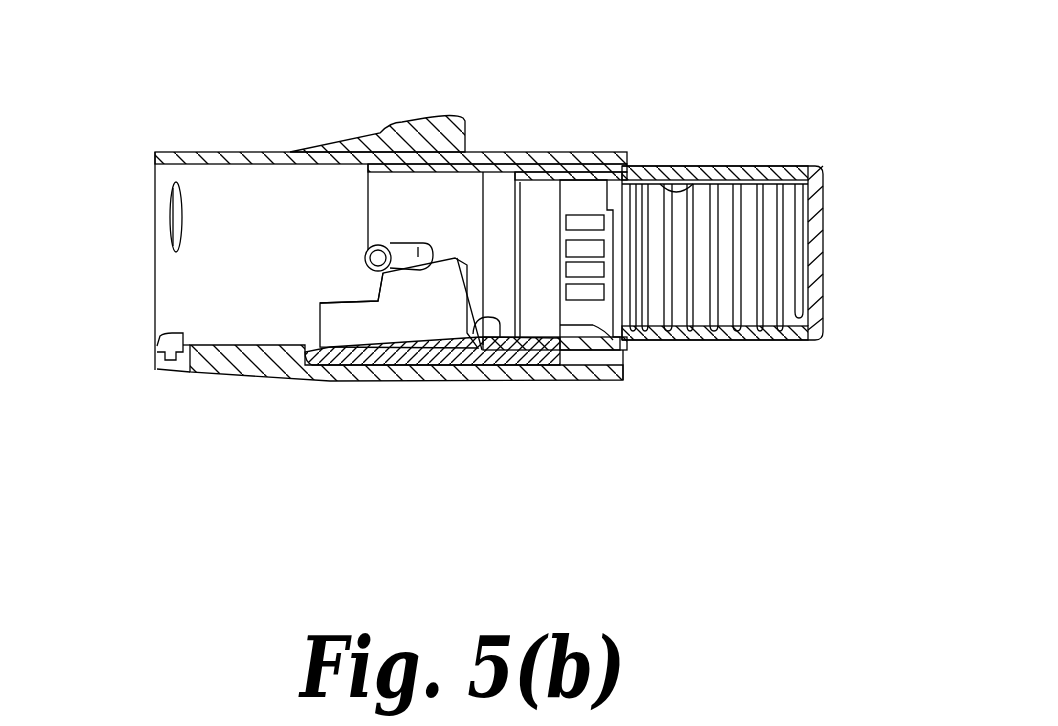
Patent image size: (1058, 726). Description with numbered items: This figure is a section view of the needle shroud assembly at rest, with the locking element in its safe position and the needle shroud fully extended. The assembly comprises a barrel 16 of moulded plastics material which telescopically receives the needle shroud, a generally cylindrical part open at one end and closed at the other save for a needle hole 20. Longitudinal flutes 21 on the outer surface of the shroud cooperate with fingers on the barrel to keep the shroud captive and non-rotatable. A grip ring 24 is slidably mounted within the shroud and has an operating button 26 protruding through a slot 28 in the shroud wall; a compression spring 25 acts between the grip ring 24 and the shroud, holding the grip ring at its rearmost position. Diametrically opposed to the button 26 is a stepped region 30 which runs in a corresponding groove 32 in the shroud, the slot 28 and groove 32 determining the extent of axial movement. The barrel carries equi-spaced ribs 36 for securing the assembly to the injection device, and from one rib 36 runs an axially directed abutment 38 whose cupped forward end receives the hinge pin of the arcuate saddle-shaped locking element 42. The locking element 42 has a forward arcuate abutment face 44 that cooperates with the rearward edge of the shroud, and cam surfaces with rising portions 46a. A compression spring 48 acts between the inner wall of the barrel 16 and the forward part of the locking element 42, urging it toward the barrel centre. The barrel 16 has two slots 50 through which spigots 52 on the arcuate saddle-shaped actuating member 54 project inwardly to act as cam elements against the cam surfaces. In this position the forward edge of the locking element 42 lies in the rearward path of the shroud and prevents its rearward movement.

The barrel 16 is at (546, 160).
The needle hole 20 is at (823, 252).
The longitudinal flutes 21 is at (765, 165).
The grip ring 24 is at (552, 293).
The compression spring 25 is at (733, 280).
The operating button 26 is at (597, 337).
The slot 28 is at (687, 340).
The stepped region 30 is at (590, 180).
The groove 32 is at (658, 182).
The ribs 36 is at (168, 215).
The axially directed abutment 38 is at (235, 345).
The locking element 42 is at (387, 320).
The forward arcuate abutment face 44 is at (497, 320).
The rising portions 46a is at (383, 270).
The compression spring 48 is at (425, 345).
The slots 50 is at (417, 257).
The spigots 52 is at (365, 252).
The actuating member 54 is at (407, 128).